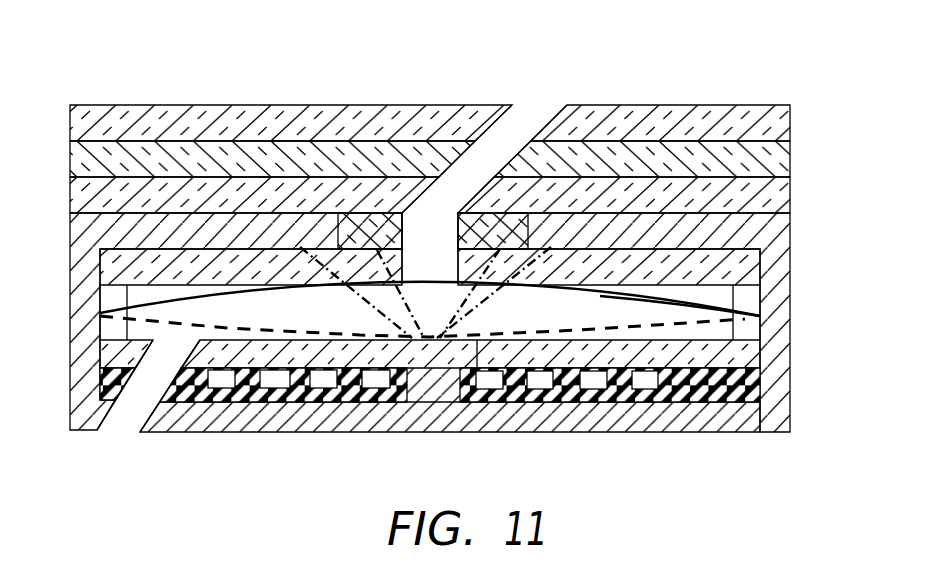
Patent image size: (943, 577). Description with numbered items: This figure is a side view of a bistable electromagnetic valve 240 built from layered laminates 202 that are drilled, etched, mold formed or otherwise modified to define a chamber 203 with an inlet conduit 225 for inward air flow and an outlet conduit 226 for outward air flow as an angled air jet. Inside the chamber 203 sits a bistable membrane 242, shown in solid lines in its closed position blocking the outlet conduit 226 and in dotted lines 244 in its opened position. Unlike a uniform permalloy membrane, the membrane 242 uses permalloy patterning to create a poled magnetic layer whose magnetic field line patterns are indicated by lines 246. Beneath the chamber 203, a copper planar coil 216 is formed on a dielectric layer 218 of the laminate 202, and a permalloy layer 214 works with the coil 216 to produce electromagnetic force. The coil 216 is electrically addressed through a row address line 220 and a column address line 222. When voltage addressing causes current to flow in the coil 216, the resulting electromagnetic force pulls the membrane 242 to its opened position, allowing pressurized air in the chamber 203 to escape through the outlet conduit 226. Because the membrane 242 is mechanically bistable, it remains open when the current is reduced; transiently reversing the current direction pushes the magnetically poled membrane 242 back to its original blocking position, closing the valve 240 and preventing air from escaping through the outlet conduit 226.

The laminates 202 is at (222, 197).
The chamber 203 is at (713, 297).
The permalloy layer 214 is at (777, 395).
The copper planar coil 216 is at (543, 380).
The dielectric layer 218 is at (743, 397).
The row address line 220 is at (690, 343).
The column address line 222 is at (223, 380).
The inlet conduit 225 is at (131, 406).
The outlet conduit 226 is at (529, 115).
The electromagnetic valve 240 is at (750, 60).
The bistable membrane 242 is at (727, 312).
The dotted lines 244 is at (713, 322).
The lines 246 is at (418, 322).